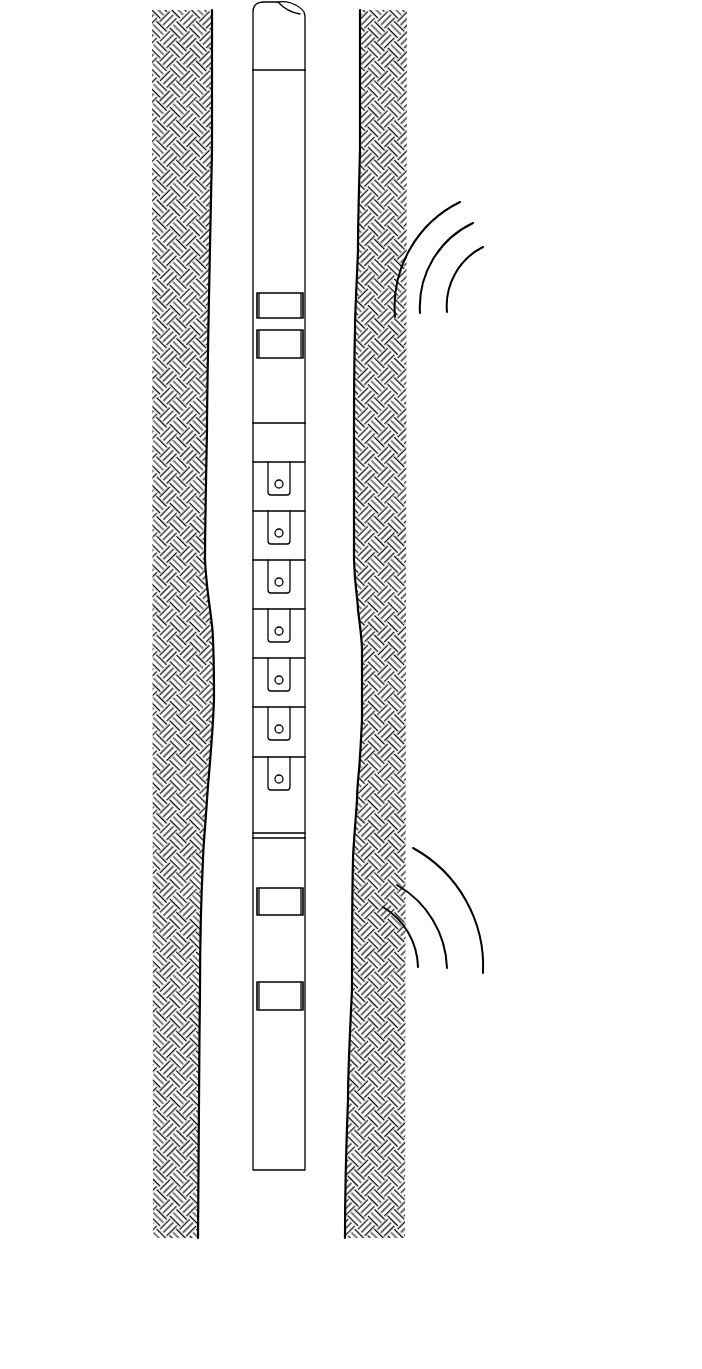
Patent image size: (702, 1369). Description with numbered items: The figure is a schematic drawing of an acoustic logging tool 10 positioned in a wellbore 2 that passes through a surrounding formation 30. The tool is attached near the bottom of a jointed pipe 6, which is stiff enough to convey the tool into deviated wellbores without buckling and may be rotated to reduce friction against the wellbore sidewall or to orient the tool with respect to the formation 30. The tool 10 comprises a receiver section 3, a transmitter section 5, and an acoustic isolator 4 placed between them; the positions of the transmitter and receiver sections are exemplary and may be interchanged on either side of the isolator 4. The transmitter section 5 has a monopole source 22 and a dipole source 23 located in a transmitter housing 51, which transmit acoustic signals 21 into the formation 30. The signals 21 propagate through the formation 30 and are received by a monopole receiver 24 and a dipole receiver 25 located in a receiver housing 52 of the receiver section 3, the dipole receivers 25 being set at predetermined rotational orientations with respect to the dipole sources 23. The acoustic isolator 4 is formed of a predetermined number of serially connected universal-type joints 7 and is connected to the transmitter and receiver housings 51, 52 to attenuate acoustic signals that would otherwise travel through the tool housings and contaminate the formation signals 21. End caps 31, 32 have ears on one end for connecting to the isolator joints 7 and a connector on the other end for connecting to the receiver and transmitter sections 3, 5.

The acoustic logging tool 10 is at (136, 592).
The wellbore 2 is at (363, 100).
The receiver section 3 is at (330, 165).
The acoustic isolator 4 is at (318, 533).
The transmitter section 5 is at (318, 855).
The jointed pipe 6 is at (305, 16).
The universal-type joint 7 is at (305, 578).
The acoustic signals 21 is at (462, 268).
The monopole source 22 is at (255, 901).
The dipole source 23 is at (255, 995).
The monopole receiver 24 is at (255, 345).
The dipole receiver 25 is at (255, 307).
The formation 30 is at (473, 715).
The end cap 31 is at (253, 443).
The end cap 32 is at (253, 813).
The transmitter housing 51 is at (253, 858).
The receiver housing 52 is at (253, 158).